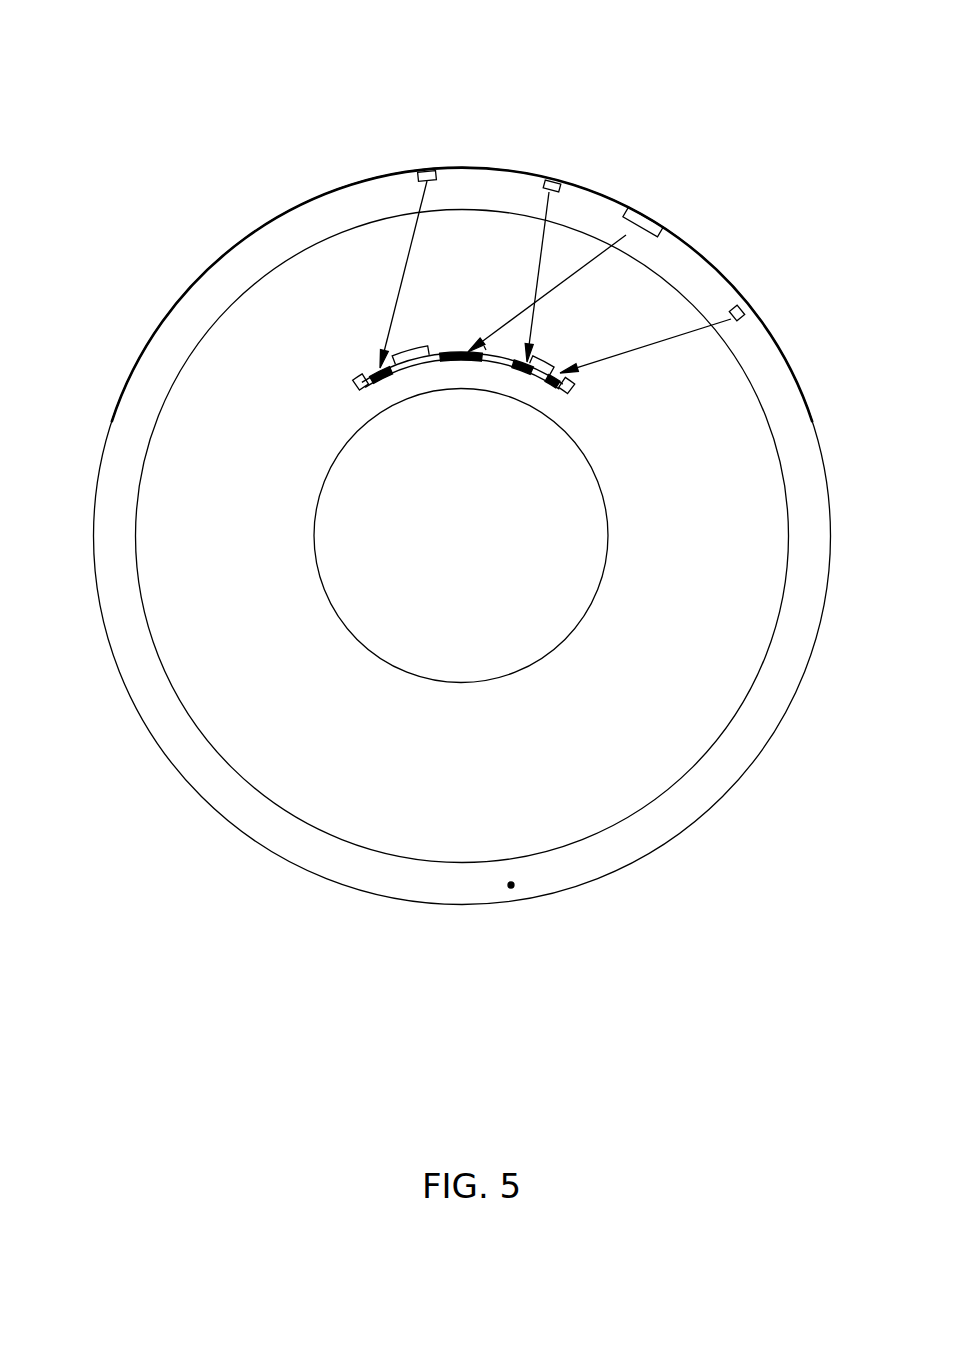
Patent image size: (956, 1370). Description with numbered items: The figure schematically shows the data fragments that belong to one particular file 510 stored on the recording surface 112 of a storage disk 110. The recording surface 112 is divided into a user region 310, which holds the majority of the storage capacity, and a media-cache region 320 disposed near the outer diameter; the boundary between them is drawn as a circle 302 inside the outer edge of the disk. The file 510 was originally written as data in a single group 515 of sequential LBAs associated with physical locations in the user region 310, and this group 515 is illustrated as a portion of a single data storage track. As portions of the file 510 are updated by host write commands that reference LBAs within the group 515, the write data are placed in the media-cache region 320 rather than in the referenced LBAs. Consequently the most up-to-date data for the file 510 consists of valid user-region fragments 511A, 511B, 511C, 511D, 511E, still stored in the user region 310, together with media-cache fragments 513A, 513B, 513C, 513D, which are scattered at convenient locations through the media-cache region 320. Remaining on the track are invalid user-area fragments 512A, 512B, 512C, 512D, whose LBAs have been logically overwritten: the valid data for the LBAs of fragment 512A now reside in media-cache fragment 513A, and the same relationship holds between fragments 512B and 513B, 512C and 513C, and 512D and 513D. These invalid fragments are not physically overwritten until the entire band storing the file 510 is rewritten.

The storage disk 110 is at (168, 305).
The recording surface 112 is at (461, 589).
The inner edge of ring 302 is at (235, 838).
The user region 310 is at (462, 539).
The media-cache region 320 is at (508, 892).
The file 510 is at (497, 140).
The valid user-region fragment 511A is at (358, 372).
The valid user-region fragment 511B is at (408, 350).
The valid user-region fragment 511C is at (481, 348).
The valid user-region fragment 511D is at (545, 366).
The valid user-region fragment 511E is at (568, 380).
The invalid user-area fragment 512A is at (382, 386).
The invalid user-area fragment 512B is at (463, 363).
The invalid user-area fragment 512C is at (513, 388).
The invalid user-area fragment 512D is at (549, 392).
The media-cache fragment 513A is at (427, 172).
The media-cache fragment 513B is at (655, 210).
The media-cache fragment 513C is at (552, 180).
The media-cache fragment 513D is at (745, 306).
The group of sequential LBAs 515 is at (355, 393).